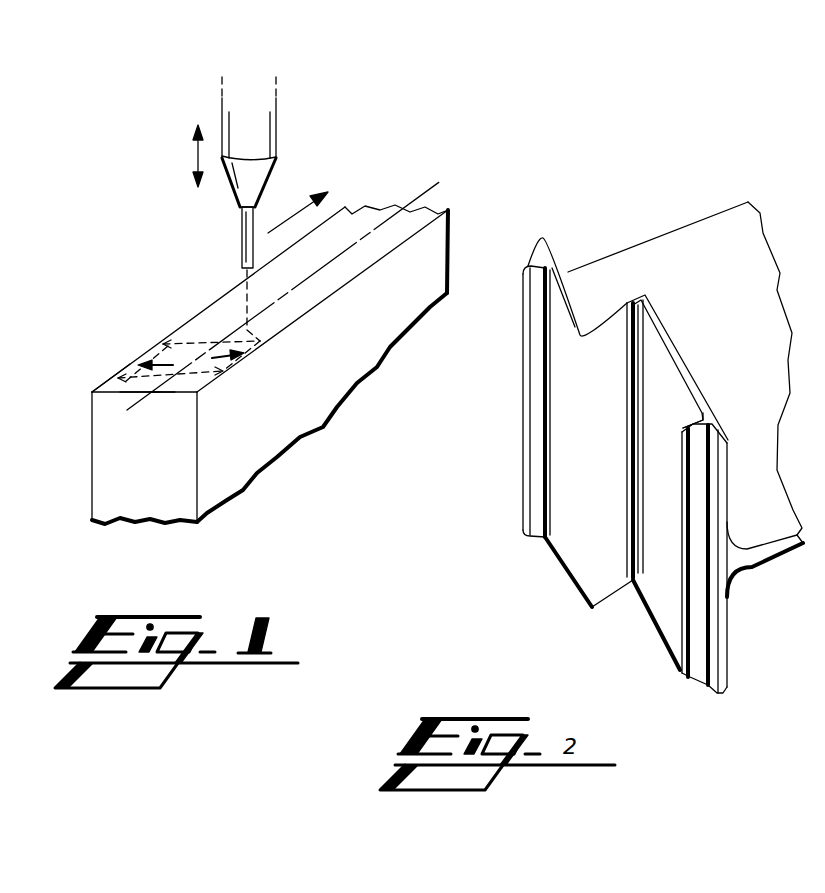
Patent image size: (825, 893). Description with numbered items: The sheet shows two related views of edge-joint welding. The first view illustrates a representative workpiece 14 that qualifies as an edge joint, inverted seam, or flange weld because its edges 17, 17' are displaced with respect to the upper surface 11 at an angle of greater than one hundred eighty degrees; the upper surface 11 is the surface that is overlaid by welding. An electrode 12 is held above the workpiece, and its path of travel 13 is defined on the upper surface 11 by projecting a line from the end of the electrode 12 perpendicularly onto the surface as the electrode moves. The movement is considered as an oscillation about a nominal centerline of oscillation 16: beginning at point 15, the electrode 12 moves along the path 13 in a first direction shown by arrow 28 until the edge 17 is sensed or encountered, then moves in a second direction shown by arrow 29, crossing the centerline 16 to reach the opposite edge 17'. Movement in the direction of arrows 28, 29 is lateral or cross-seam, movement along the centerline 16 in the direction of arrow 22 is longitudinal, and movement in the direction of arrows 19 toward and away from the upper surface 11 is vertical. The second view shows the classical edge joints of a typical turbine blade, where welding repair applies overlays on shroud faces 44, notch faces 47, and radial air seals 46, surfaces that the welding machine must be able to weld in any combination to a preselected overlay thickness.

In FIG. 1, the upper surface 11 is at (107, 385).
In FIG. 1, the electrode 12 is at (241, 247).
In FIG. 1, the path of travel 13 is at (183, 345).
In FIG. 1, the workpiece 14 is at (313, 403).
In FIG. 2, the workpiece 14 is at (707, 230).
In FIG. 1, the point 15 is at (160, 406).
In FIG. 1, the nominal centerline of oscillation 16 is at (128, 410).
In FIG. 1, the edge 17 is at (116, 458).
In FIG. 1, the edge 17' is at (248, 458).
In FIG. 1, the arrows 19 is at (195, 152).
In FIG. 1, the arrow 22 is at (292, 212).
In FIG. 1, the arrow 28 is at (161, 364).
In FIG. 1, the arrow 29 is at (222, 357).
In FIG. 2, the shroud faces 44 is at (608, 313).
In FIG. 2, the radial air seals 46 is at (523, 463).
In FIG. 2, the notch faces 47 is at (633, 582).